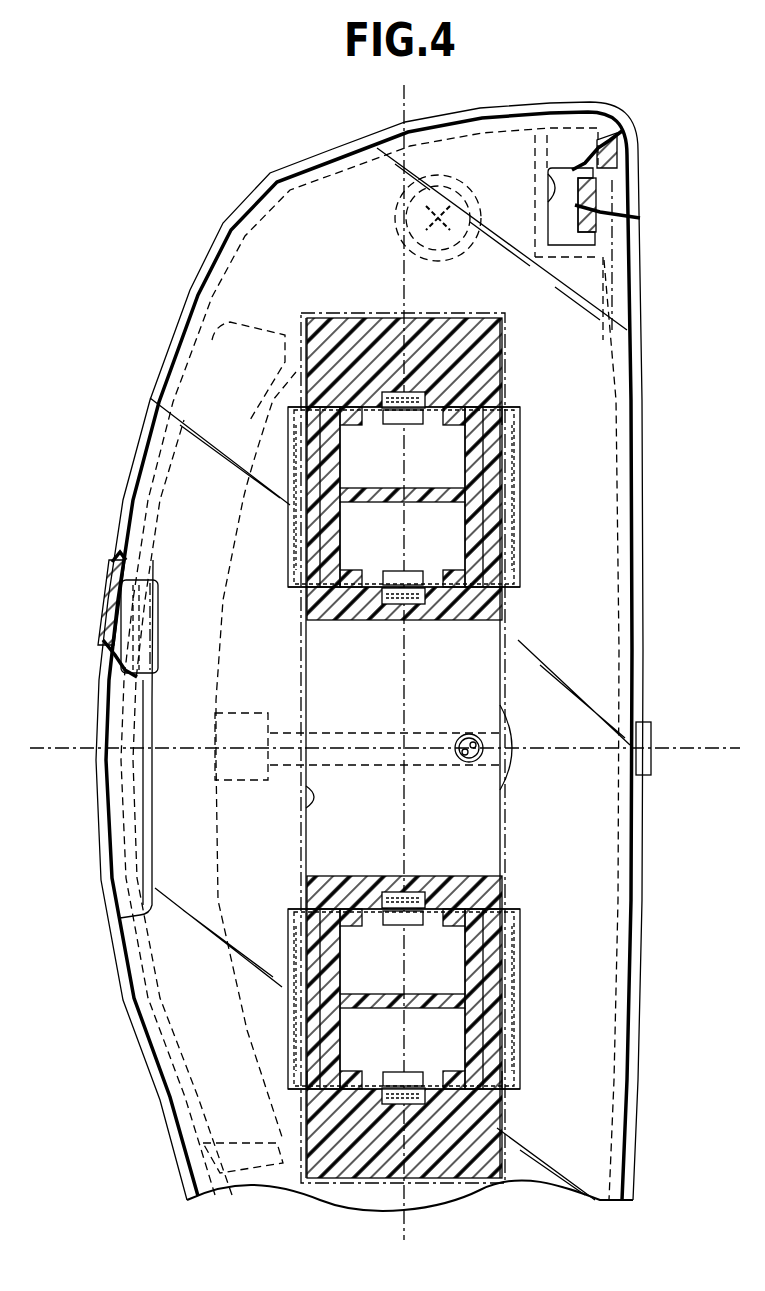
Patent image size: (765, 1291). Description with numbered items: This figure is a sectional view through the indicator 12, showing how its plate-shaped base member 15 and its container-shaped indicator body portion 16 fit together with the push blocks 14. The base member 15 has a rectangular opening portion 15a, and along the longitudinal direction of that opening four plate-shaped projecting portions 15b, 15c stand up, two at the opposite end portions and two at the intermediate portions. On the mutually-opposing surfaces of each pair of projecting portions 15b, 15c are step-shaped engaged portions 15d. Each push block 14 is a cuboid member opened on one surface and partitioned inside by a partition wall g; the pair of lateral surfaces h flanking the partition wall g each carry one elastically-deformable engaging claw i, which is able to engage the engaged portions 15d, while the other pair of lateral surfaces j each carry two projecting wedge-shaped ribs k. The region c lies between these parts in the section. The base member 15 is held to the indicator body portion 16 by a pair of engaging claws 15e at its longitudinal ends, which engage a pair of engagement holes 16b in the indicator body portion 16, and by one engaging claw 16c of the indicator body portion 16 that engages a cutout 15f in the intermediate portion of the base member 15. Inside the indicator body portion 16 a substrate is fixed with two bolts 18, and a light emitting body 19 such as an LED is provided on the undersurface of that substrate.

The indicator 12 is at (148, 276).
The push block 14 is at (515, 520).
The base member 15 is at (128, 996).
The opening portion 15a is at (312, 540).
The projecting portion 15b is at (442, 340).
The projecting portion 15c is at (432, 600).
The engaged portion 15d is at (398, 395).
The engaging claw 15e is at (605, 208).
The cutout 15f is at (135, 636).
The indicator body portion 16 is at (138, 412).
The engagement hole 16b is at (553, 188).
The engaging claw 16c is at (125, 688).
The bolt 18 is at (405, 250).
The light emitting body 19 is at (225, 615).
The lateral surface h is at (338, 404).
The wedge-shaped rib k is at (298, 412).
The lateral surface j is at (302, 454).
The clearance c is at (300, 484).
The engaging claw i is at (396, 426).
The partition wall g is at (392, 500).